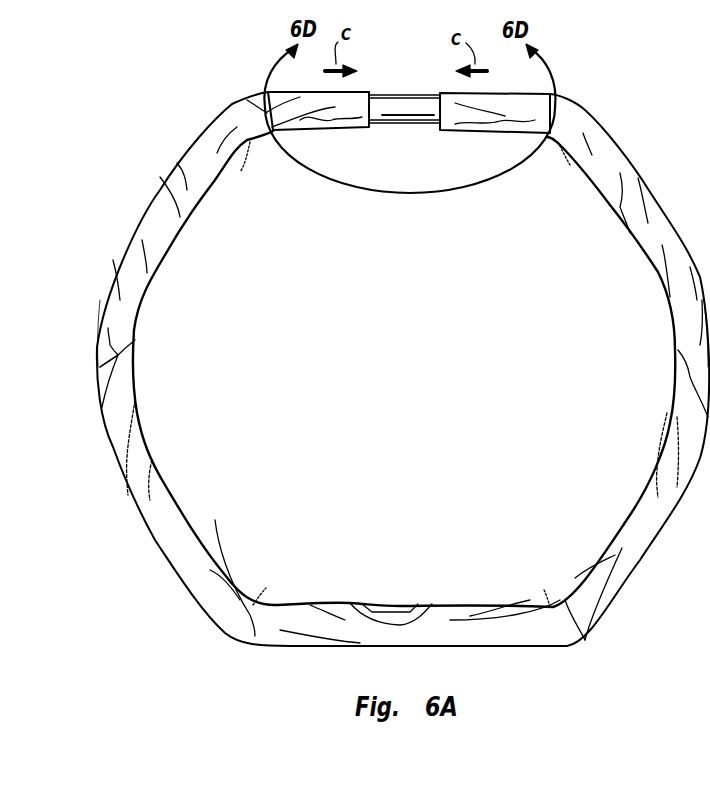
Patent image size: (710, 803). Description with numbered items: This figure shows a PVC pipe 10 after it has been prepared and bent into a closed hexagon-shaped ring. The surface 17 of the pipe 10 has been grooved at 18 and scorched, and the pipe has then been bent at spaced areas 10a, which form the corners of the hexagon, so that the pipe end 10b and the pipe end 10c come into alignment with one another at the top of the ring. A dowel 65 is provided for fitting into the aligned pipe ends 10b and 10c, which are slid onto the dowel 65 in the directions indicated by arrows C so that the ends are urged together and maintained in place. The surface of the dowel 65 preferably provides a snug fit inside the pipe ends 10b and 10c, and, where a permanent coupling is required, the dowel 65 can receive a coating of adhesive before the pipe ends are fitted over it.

The PVC pipe 10 is at (403, 369).
The spaced areas 10a is at (250, 142).
The pipe end 10b is at (372, 108).
The pipe end 10c is at (432, 123).
The surface 17 is at (129, 322).
The grooves 18 is at (120, 357).
The dowel 65 is at (410, 118).